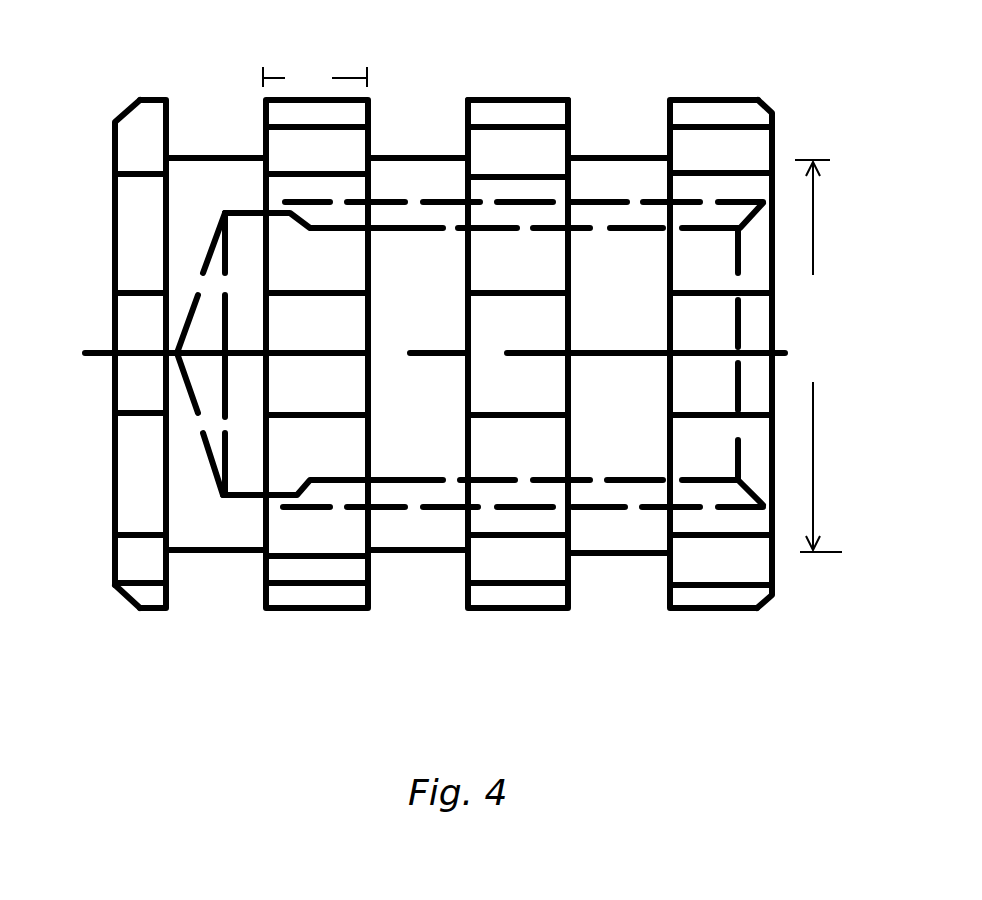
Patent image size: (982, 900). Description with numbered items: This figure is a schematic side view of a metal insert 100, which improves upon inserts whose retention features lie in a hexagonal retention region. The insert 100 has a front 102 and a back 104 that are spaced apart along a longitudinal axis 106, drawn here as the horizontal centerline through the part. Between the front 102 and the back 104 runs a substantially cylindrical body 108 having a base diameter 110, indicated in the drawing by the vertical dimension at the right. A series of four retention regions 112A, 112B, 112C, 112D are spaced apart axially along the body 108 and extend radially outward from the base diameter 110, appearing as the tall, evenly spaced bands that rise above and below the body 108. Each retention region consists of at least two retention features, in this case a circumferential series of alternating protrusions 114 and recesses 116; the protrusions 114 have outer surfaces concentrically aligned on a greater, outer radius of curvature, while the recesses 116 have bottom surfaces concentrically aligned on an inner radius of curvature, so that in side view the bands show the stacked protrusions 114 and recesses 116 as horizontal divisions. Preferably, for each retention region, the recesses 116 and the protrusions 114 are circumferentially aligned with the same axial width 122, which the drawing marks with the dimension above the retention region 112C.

The metal insert 100 is at (262, 40).
The front 102 is at (773, 132).
The back 104 is at (112, 227).
The longitudinal axis 106 is at (785, 353).
The substantially cylindrical body 108 is at (598, 558).
The base diameter 110 is at (813, 240).
The retention region 112A is at (771, 388).
The retention region 112B is at (565, 361).
The retention region 112C is at (283, 614).
The retention region 112D is at (140, 399).
The protrusions 114 is at (522, 97).
The recesses 116 is at (558, 150).
The axial width 122 is at (310, 80).